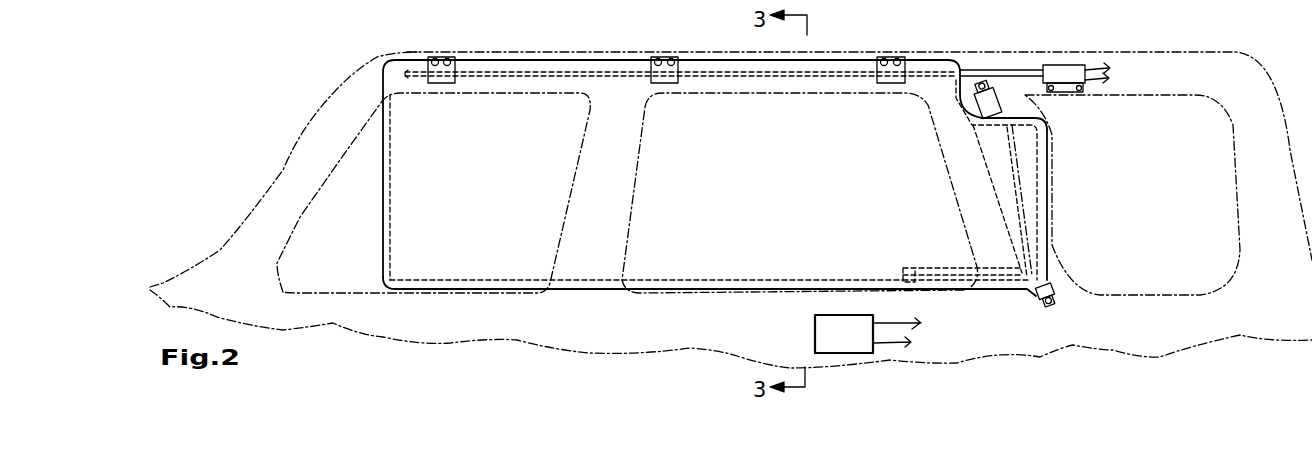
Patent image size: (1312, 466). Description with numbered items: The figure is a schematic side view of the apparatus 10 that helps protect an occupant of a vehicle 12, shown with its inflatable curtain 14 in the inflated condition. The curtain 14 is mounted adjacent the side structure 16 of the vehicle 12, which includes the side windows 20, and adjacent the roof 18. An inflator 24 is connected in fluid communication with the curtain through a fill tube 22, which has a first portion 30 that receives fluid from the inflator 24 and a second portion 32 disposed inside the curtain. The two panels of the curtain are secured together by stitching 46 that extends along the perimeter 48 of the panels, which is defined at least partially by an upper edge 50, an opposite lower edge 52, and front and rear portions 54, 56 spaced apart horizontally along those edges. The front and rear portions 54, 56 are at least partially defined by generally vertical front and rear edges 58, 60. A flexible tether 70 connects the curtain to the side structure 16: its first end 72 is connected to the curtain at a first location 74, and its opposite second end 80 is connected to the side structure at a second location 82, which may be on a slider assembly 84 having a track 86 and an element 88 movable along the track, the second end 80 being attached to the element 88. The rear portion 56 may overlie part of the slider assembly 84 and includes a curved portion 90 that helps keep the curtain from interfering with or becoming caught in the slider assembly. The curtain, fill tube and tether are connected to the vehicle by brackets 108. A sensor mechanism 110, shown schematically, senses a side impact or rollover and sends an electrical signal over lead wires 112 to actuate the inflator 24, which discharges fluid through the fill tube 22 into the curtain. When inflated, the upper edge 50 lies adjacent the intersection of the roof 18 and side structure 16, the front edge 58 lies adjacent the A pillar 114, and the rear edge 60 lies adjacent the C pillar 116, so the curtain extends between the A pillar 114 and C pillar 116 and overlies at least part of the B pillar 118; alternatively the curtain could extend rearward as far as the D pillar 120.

The apparatus 10 is at (340, 52).
The vehicle 12 is at (305, 80).
The inflatable curtain 14 is at (523, 210).
The side structure 16 is at (487, 313).
The roof 18 is at (567, 52).
The side windows 20 is at (357, 273).
The fill tube 22 is at (993, 70).
The inflator 24 is at (1063, 65).
The first portion of fill tube 30 is at (1028, 76).
The second portion of fill tube 32 is at (490, 72).
The stitching 46 is at (414, 280).
The perimeter 48 is at (448, 278).
The upper edge 50 is at (733, 60).
The lower edge 52 is at (590, 290).
The front portion 54 is at (420, 175).
The rear portion 56 is at (1013, 187).
The front edge 58 is at (382, 203).
The rear edge 60 is at (1047, 198).
The tether 70 is at (937, 273).
The first end of tether 72 is at (907, 267).
The first location 74 is at (902, 270).
The second end of tether 80 is at (1015, 265).
The second location 82 is at (1022, 266).
The slider assembly 84 is at (995, 105).
The track 86 is at (997, 113).
The element 88 is at (1034, 296).
The curved portion 90 is at (963, 106).
The brackets 108 is at (440, 57).
The sensor mechanism 110 is at (847, 337).
The lead wires 112 is at (1098, 68).
The A pillar 114 is at (283, 222).
The C pillar 116 is at (950, 138).
The B pillar 118 is at (603, 190).
The D pillar 120 is at (1270, 157).